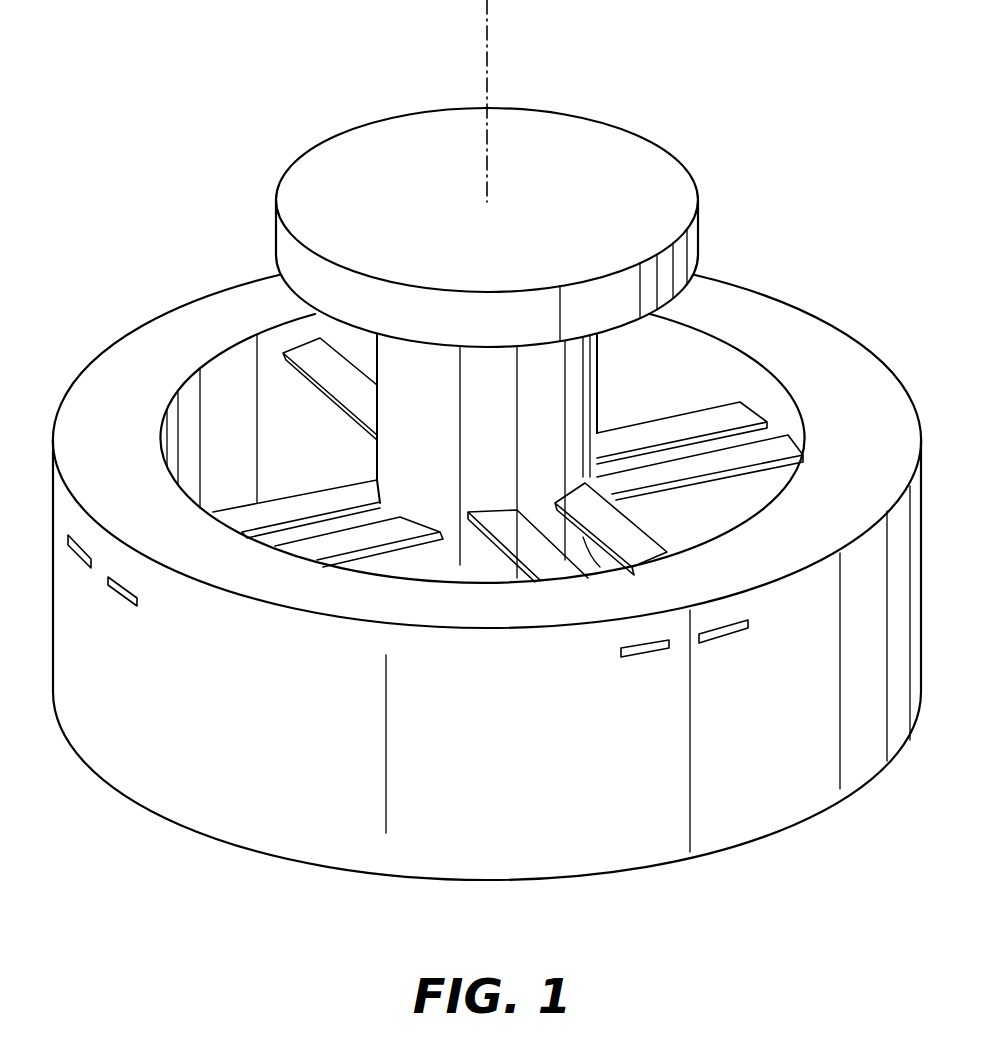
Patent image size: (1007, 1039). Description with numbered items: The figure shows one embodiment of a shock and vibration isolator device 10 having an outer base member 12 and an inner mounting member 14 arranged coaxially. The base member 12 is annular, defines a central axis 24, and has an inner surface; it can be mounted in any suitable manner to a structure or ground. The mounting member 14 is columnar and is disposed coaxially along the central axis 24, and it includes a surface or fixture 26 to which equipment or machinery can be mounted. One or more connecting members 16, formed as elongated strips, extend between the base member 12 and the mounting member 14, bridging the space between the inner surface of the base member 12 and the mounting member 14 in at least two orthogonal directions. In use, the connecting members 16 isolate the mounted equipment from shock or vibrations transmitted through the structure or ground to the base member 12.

The isolator device 10 is at (177, 203).
The outer base member 12 is at (129, 775).
The inner mounting member 14 is at (433, 398).
The connecting members 16 is at (333, 502).
The central axis 24 is at (493, 10).
The surface or fixture 26 is at (610, 155).